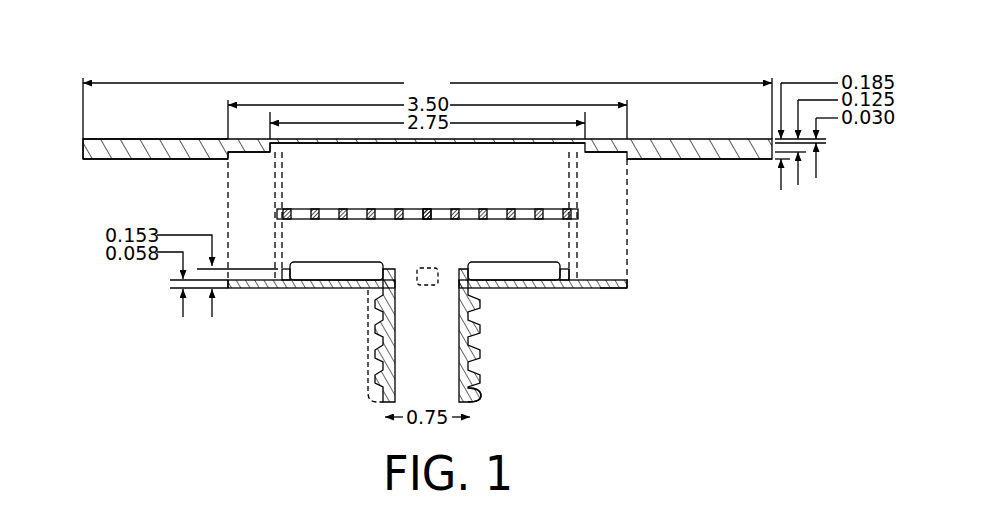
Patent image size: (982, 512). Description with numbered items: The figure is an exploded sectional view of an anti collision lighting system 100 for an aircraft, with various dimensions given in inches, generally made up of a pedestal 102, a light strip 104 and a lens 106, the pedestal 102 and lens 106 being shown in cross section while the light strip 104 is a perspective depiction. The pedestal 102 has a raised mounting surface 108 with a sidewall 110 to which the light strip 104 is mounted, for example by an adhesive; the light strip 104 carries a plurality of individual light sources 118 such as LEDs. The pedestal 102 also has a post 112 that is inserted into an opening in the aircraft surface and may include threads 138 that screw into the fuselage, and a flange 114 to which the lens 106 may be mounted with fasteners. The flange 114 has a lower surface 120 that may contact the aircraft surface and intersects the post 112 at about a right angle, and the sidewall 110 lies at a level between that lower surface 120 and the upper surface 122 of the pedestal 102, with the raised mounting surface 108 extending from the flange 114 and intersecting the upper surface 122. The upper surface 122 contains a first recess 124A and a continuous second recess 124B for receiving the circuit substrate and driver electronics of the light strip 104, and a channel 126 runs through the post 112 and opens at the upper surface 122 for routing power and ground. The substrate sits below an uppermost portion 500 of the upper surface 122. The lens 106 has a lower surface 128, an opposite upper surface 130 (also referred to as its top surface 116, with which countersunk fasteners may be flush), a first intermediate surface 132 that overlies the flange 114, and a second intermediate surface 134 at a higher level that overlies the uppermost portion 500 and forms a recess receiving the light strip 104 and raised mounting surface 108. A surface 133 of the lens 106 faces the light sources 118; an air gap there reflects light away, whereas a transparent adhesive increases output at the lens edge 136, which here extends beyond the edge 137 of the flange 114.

The anti collision lighting system 100 is at (194, 74).
The pedestal 102 is at (481, 345).
The light strip 104 is at (427, 183).
The lens 106 is at (148, 138).
The raised mounting surface 108 is at (317, 288).
The sidewall 110 is at (578, 275).
The post 112 is at (367, 337).
The flange 114 is at (250, 289).
The upper surface of the lens 116 is at (170, 138).
The light sources 118 is at (357, 208).
The lower surface of the flange 120 is at (538, 288).
The upper surface of the pedestal 122 is at (565, 268).
The first recess 124A is at (337, 262).
The second recess 124B is at (430, 268).
The channel 126 is at (444, 350).
The lower surface of the lens 128 is at (175, 162).
The upper surface of the lens 130 is at (705, 137).
The first intermediate surface 132 is at (247, 156).
The surface of the lens 133 is at (275, 148).
The second intermediate surface 134 is at (446, 146).
The edge of the lens 136 is at (82, 147).
The edge of the flange 137 is at (634, 284).
The threads 138 is at (480, 364).
The uppermost portion of the top surface 500 is at (475, 266).